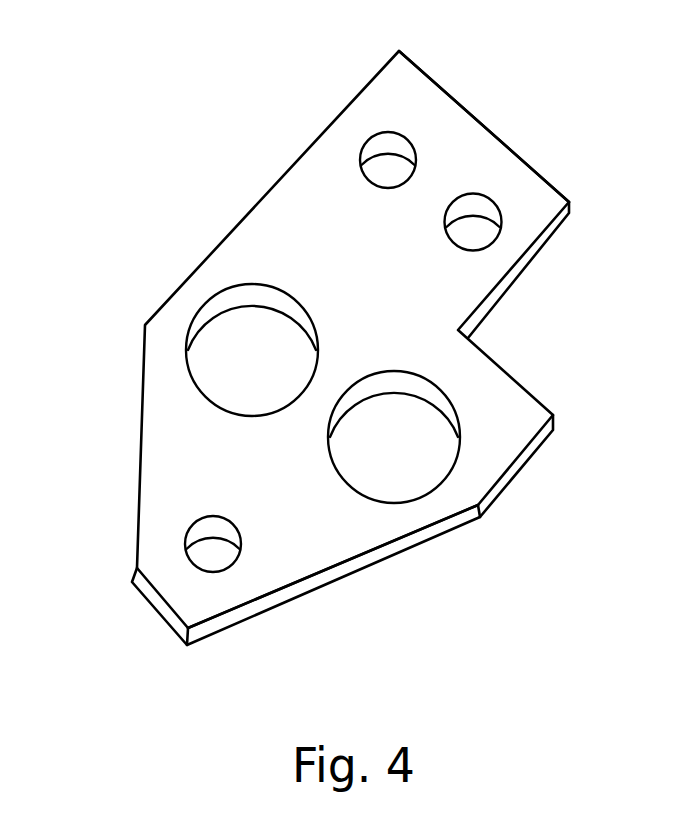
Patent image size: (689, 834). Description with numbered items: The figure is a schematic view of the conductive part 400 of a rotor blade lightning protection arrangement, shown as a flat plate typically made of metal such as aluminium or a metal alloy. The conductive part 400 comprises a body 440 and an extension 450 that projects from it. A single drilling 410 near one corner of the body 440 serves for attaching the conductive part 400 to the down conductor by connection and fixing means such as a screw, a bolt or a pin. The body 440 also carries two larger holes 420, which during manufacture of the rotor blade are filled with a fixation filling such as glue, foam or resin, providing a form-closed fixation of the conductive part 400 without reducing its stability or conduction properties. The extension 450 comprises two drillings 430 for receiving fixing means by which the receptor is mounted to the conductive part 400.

The conductive part 400 is at (637, 619).
The drilling 410 is at (208, 548).
The holes 420 is at (237, 337).
The drillings 430 is at (378, 162).
The body 440 is at (312, 540).
The extension 450 is at (467, 138).